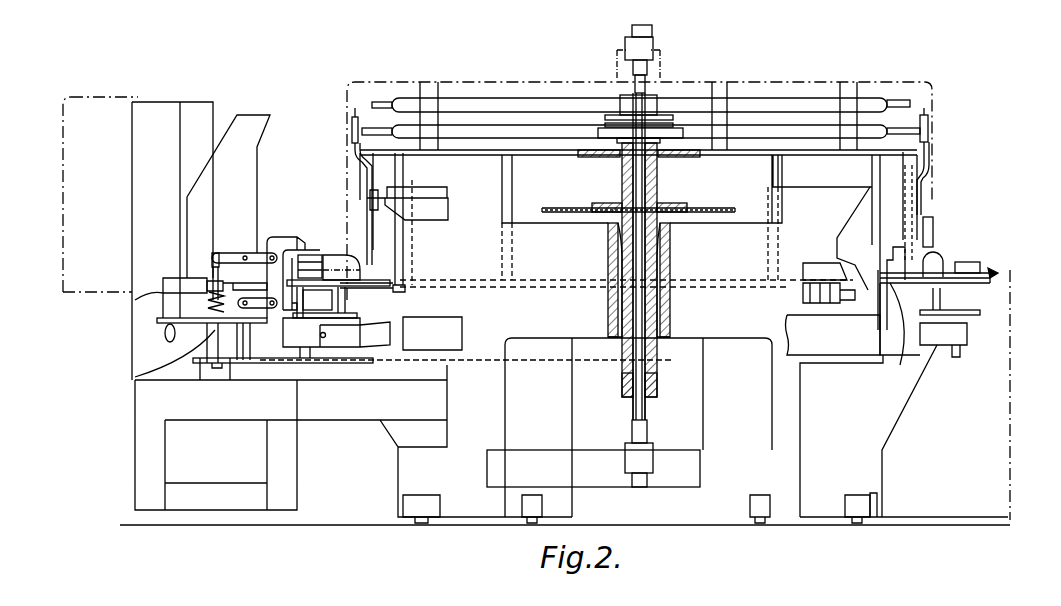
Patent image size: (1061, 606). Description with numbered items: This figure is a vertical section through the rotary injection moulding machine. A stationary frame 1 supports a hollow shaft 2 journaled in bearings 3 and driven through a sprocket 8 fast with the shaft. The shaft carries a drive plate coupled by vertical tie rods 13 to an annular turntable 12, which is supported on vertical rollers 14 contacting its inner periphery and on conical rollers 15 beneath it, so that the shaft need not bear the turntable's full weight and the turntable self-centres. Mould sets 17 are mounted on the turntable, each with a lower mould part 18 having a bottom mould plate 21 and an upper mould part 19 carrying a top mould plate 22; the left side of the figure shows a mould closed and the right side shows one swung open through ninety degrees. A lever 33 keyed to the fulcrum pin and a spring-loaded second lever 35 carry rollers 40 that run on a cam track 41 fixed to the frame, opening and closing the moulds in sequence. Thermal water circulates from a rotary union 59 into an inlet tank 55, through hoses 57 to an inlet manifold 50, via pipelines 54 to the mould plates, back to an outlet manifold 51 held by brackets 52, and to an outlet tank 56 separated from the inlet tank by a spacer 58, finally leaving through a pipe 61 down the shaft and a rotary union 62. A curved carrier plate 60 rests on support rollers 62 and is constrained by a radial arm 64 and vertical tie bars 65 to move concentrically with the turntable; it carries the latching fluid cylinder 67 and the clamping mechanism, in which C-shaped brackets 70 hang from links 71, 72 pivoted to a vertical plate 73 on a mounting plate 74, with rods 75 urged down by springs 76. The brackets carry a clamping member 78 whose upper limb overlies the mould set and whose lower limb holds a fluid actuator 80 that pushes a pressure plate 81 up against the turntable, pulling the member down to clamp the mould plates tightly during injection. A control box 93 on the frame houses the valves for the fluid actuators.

The stationary frame 1 is at (740, 330).
The hollow shaft 2 is at (650, 195).
The bearings 3 is at (668, 215).
The sprocket 8 is at (720, 208).
The annular turntable 12 is at (992, 278).
The vertical tie rods 13 is at (872, 180).
The vertical rollers 14 is at (400, 290).
The conical rollers 15 is at (340, 307).
The mould set 17 is at (947, 239).
The lower mould part 18 is at (995, 272).
The upper mould part 19 is at (935, 228).
The bottom mould plate 21 is at (978, 262).
The top mould plate 22 is at (930, 218).
The lever 33 is at (865, 245).
The second lever 35 is at (850, 262).
The rollers 40 is at (860, 318).
The cam track 41 is at (395, 190).
The inlet manifold 50 is at (888, 100).
The outlet manifold 51 is at (885, 125).
The brackets 52 is at (855, 151).
The pipelines 54 is at (355, 158).
The inlet tank 55 is at (650, 97).
The outlet tank 56 is at (630, 128).
The hoses 57 is at (660, 140).
The spacer 58 is at (660, 110).
The rotary union 59 is at (653, 30).
The curved carrier plate 60 is at (230, 330).
The pipe 61 is at (648, 411).
The rotary union / support rollers 62 is at (165, 332).
The radial arm 64 is at (485, 363).
The vertical tie bars 65 is at (212, 345).
The fluid cylinder 67 is at (195, 280).
The C-shaped brackets 70 is at (283, 245).
The lower link 71 is at (262, 308).
The upper link 72 is at (248, 253).
The vertical plate 73 is at (195, 207).
The mounting plate 74 is at (200, 313).
The rods 75 is at (226, 262).
The springs 76 is at (212, 347).
The clamping member 78 is at (312, 255).
The fluid actuator 80 is at (305, 347).
The pressure plate 81 is at (403, 292).
The control box 93 is at (75, 133).